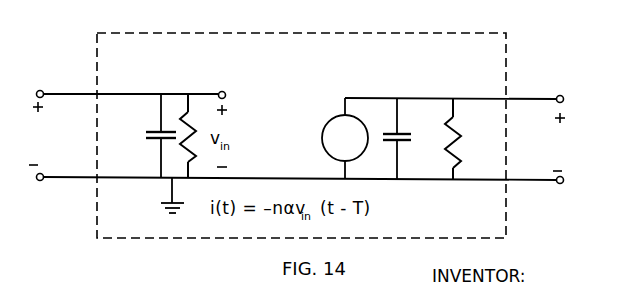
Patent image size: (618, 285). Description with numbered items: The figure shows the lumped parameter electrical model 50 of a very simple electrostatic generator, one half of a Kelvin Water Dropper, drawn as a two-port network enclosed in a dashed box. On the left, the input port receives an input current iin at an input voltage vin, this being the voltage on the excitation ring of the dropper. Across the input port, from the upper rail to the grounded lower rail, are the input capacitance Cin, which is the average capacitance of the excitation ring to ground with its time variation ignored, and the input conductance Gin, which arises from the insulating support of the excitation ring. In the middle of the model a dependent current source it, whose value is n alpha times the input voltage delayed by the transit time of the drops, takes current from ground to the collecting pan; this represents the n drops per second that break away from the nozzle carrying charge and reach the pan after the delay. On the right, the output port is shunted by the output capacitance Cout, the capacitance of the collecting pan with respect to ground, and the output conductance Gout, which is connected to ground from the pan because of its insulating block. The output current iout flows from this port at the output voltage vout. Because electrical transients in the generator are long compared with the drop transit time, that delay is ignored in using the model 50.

The electrical model 50 is at (298, 70).
The input current iin is at (54, 117).
The input voltage vin is at (37, 133).
The input capacitance Cin is at (149, 136).
The input conductance Gin is at (184, 113).
The current source it is at (307, 124).
The output capacitance Cout is at (414, 138).
The output conductance Gout is at (472, 139).
The output current iout is at (550, 121).
The output voltage vout is at (572, 142).